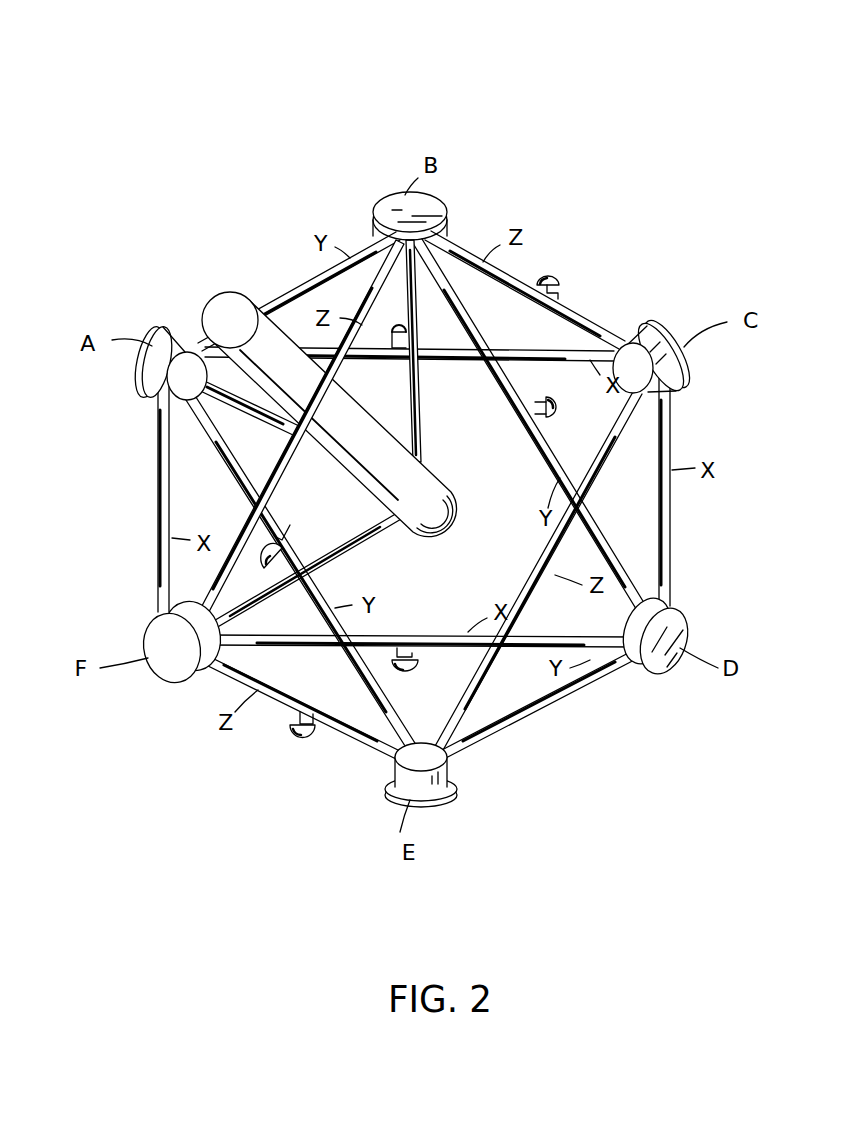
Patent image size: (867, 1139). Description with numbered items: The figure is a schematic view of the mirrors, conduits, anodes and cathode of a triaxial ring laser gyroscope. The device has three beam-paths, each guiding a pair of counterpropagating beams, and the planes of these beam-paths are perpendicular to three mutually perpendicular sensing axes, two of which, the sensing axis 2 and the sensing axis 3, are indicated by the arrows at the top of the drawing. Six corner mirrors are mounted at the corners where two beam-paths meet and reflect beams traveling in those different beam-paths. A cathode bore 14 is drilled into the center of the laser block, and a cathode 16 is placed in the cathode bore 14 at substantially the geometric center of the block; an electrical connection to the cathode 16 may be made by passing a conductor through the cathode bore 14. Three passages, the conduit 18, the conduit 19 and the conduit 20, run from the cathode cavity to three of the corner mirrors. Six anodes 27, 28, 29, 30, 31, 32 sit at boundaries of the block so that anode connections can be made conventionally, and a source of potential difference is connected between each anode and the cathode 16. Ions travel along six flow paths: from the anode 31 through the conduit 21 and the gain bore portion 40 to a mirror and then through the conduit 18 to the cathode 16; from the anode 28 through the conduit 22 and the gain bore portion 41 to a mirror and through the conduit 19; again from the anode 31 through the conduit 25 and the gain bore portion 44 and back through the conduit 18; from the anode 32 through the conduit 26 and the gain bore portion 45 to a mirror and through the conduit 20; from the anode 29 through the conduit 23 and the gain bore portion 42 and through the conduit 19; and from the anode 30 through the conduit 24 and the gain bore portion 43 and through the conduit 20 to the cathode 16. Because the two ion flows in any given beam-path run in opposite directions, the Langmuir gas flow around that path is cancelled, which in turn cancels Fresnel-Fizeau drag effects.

The sensing axis 2 is at (410, 55).
The sensing axis 3 is at (410, 0).
The cathode bore 14 is at (230, 310).
The cathode 16 is at (445, 494).
The passage (conduit) 18 is at (421, 397).
The passage (conduit) 19 is at (283, 428).
The passage (conduit) 20 is at (355, 545).
The conduit 21 is at (292, 547).
The conduit 22 is at (547, 418).
The conduit 23 is at (410, 664).
The conduit 24 is at (410, 343).
The conduit 25 is at (555, 290).
The conduit 26 is at (313, 725).
The anode 27 is at (303, 575).
The anode 28 is at (548, 400).
The anode 29 is at (417, 678).
The anode 30 is at (408, 328).
The anode 31 is at (553, 280).
The anode 32 is at (300, 742).
The gain bore portion 40 is at (277, 525).
The gain bore portion 41 is at (478, 343).
The gain bore portion 42 is at (365, 640).
The gain bore portion 43 is at (360, 362).
The gain bore portion 44 is at (522, 272).
The gain bore portion 45 is at (282, 698).